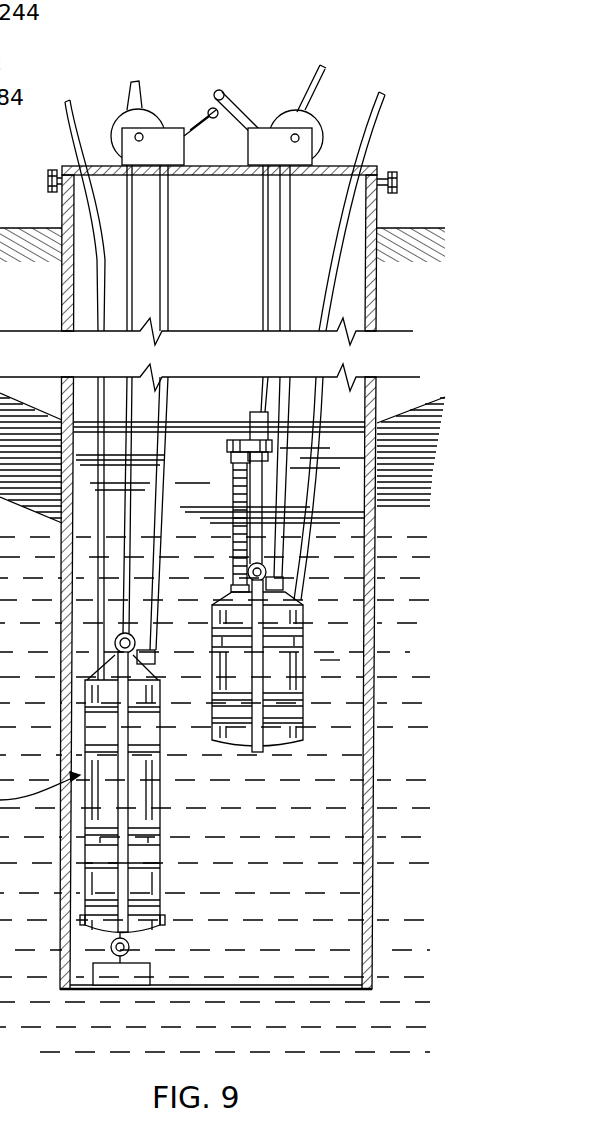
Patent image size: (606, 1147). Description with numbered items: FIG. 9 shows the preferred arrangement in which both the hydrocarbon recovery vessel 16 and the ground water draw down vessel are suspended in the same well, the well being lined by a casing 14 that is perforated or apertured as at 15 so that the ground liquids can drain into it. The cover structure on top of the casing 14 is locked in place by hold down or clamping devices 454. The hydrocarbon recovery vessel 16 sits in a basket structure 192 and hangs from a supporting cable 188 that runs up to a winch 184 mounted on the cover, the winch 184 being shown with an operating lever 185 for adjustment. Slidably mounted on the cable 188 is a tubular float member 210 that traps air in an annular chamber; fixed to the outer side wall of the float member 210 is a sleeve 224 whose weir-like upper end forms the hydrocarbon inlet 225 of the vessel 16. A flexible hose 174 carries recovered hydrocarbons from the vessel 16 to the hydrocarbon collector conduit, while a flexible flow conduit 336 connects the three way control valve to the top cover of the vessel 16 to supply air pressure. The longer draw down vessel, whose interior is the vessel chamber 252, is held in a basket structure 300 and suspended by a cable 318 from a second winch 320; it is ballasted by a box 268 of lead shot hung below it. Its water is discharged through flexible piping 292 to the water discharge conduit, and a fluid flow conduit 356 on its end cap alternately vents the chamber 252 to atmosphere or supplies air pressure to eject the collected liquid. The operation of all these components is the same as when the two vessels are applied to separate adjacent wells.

The casing 14 is at (378, 313).
The perforations 15 is at (368, 645).
The hydrocarbon recovery vessel 16 is at (330, 640).
The flexible hose 174 is at (315, 88).
The winch 184 is at (280, 96).
The pulley arm 185 is at (240, 100).
The supporting cable 188 is at (263, 252).
The basket structure 192 is at (258, 752).
The tubular float member 210 is at (262, 412).
The sleeve 224 is at (227, 442).
The hydrocarbon inlet 225 is at (237, 432).
The vessel chamber 252 is at (233, 540).
The box 268 is at (127, 975).
The flexible piping 292 is at (165, 292).
The basket structure 300 is at (130, 885).
The cable 318 is at (133, 245).
The winch 320 is at (158, 96).
The flexible flow conduit 336 is at (357, 133).
The fluid flow conduit 356 is at (78, 118).
The clamping devices 454 is at (45, 176).